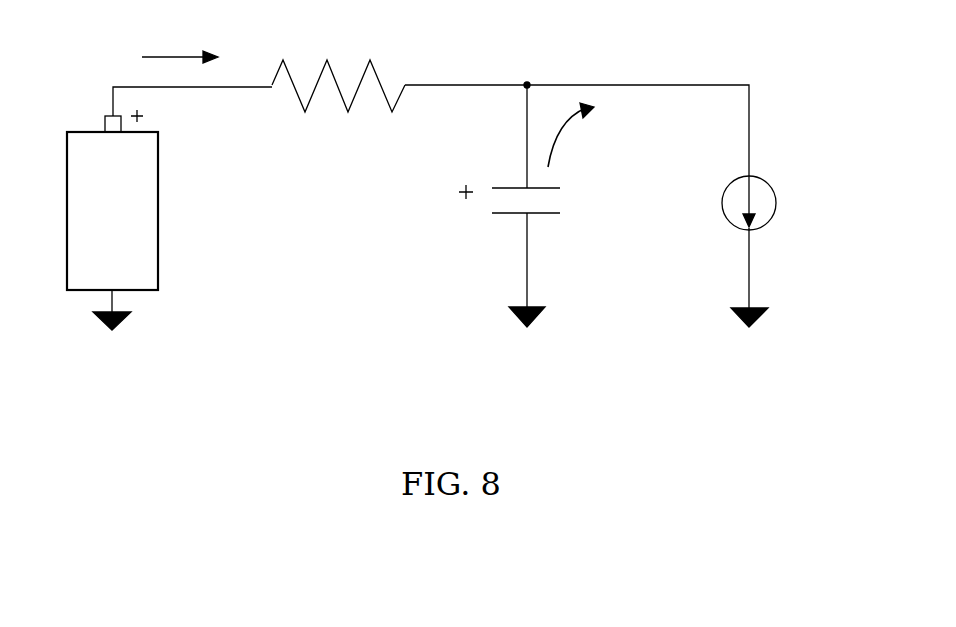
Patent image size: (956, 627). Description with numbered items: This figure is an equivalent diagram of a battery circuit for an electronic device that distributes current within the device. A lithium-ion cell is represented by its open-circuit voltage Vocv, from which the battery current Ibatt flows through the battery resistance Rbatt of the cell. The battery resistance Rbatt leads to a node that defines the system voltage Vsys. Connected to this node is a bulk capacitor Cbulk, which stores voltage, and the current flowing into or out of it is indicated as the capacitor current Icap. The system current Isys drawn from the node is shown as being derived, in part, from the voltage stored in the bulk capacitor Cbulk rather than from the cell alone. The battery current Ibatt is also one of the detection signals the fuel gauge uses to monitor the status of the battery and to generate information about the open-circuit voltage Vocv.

The open-circuit voltage Vocv is at (101, 185).
The battery current Ibatt is at (180, 43).
The battery resistance Rbatt is at (338, 69).
The system voltage Vsys is at (547, 68).
The capacitor current Icap is at (587, 135).
The bulk capacitor Cbulk is at (539, 204).
The system current Isys is at (780, 203).